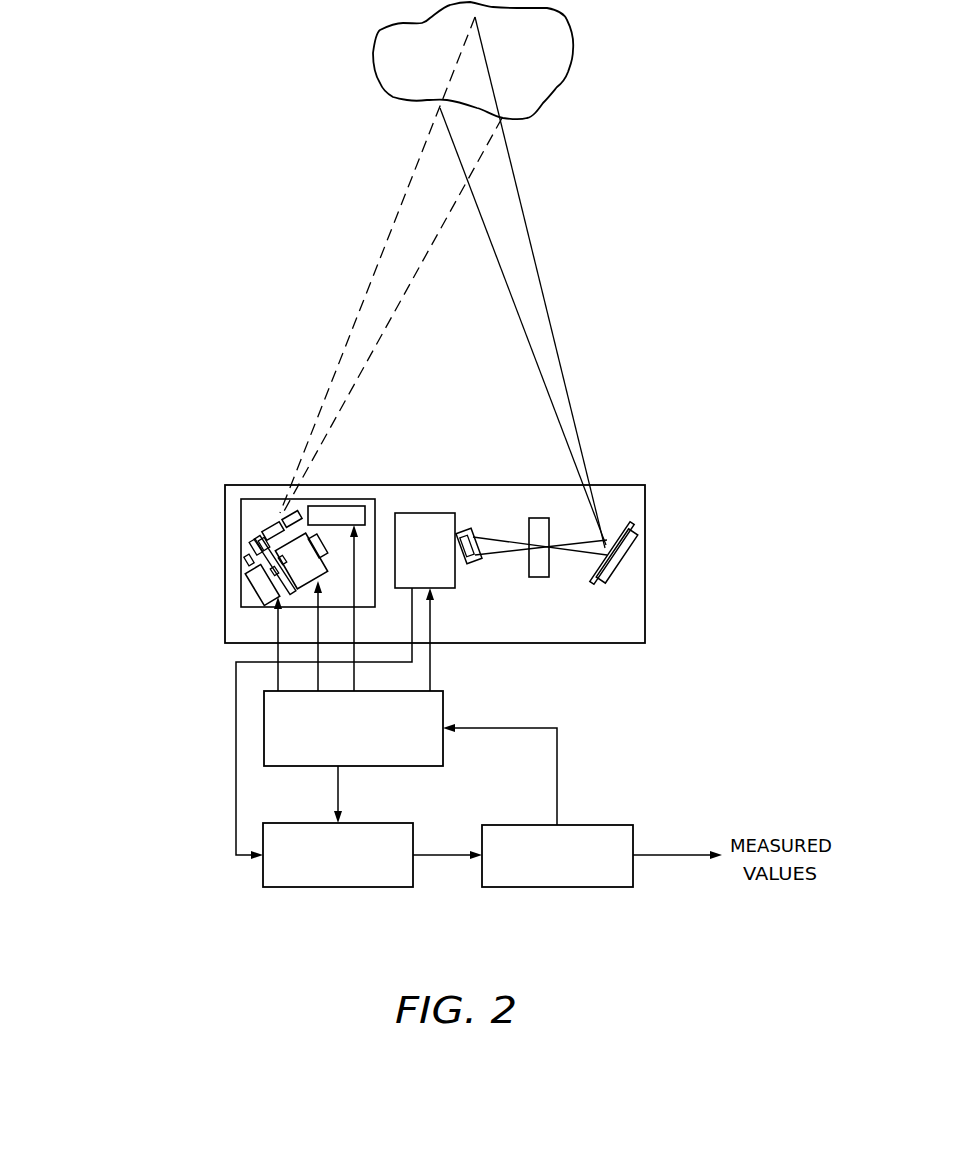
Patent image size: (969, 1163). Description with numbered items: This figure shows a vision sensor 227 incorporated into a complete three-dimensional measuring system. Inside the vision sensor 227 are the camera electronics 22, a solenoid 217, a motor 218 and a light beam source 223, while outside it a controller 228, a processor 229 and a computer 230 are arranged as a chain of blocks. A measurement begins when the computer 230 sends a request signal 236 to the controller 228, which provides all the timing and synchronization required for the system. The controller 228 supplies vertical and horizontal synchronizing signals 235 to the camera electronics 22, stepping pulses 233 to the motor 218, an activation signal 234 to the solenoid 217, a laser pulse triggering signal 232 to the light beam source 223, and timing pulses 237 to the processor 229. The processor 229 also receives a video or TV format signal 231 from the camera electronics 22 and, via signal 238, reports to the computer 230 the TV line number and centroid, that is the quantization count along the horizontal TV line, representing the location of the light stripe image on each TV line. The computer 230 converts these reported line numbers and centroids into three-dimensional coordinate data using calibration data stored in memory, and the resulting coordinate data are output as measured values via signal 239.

The camera electronics 22 is at (425, 513).
The solenoid 217 is at (335, 505).
The motor 218 is at (308, 586).
The light beam source 223 is at (258, 593).
The vision sensor 227 is at (648, 583).
The controller 228 is at (445, 706).
The processor 229 is at (375, 823).
The computer 230 is at (603, 825).
The video or TV format signal 231 is at (236, 752).
The laser pulse triggering signal 232 is at (278, 651).
The stepping pulses 233 is at (320, 627).
The activation signal 234 is at (355, 678).
The vertical and horizontal synchronizing signals 235 is at (431, 662).
The request signal 236 is at (559, 751).
The timing pulses 237 is at (338, 797).
The report signal 238 is at (440, 852).
The output signal 239 is at (673, 853).